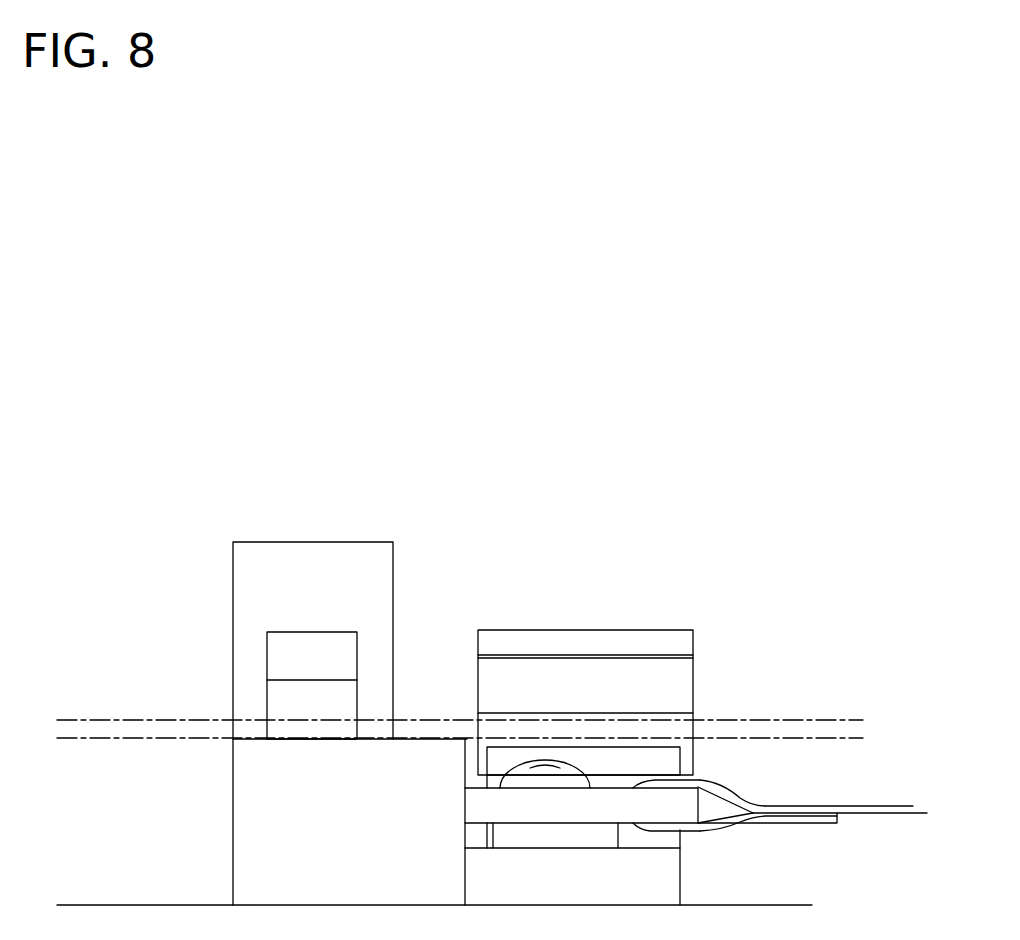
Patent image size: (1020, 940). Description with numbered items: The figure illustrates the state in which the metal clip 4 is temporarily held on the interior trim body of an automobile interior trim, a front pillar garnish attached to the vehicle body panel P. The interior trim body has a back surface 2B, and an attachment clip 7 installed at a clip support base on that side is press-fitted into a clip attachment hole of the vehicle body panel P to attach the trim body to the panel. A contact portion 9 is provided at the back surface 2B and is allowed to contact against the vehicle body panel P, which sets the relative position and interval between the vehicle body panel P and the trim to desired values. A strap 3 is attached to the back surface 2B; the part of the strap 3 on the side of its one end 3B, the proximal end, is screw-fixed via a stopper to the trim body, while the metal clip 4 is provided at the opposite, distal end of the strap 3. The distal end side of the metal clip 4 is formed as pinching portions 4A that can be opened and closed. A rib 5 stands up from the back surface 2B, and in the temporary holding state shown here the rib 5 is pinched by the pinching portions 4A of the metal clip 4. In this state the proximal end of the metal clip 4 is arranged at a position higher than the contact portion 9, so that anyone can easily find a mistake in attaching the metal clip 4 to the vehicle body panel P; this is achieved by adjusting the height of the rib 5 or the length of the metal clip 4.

The back surface 2B is at (113, 903).
The vehicle body panel P is at (87, 719).
The attachment clip 7 is at (233, 634).
The contact portion 9 is at (420, 736).
The metal clip 4 is at (708, 617).
The rib 5 is at (692, 757).
The pinching portions 4A is at (692, 770).
The one end of the strap 3B is at (748, 824).
The strap 3 is at (878, 800).